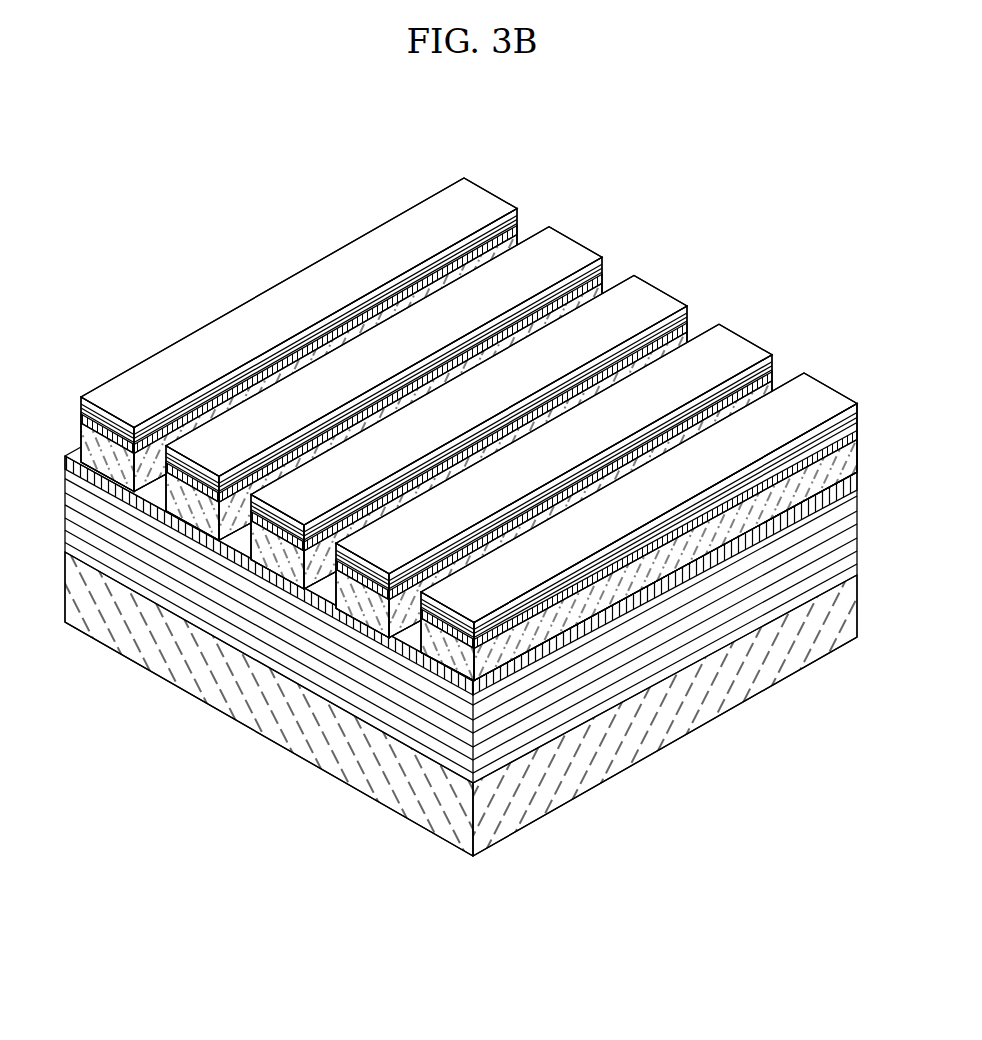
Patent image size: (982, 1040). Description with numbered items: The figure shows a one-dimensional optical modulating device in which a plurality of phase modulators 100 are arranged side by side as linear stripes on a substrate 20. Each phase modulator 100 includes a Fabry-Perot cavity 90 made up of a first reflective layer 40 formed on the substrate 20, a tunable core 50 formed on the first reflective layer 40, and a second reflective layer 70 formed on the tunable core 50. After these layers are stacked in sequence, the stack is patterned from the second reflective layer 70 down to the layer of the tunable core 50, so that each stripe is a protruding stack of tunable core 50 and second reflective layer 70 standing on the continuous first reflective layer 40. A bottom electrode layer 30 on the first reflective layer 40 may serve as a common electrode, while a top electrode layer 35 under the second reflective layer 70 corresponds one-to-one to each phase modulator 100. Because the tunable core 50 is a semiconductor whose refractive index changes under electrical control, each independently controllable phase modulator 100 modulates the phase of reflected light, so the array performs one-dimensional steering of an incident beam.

The substrate 20 is at (708, 690).
The bottom electrode layer 30 is at (372, 638).
The top electrode layer 35 is at (443, 635).
The first reflective layer 40 is at (493, 727).
The tunable core 50 is at (500, 658).
The second reflective layer 70 is at (508, 613).
The Fabry-Perot cavity 90 is at (684, 808).
The phase modulator 100 is at (586, 621).